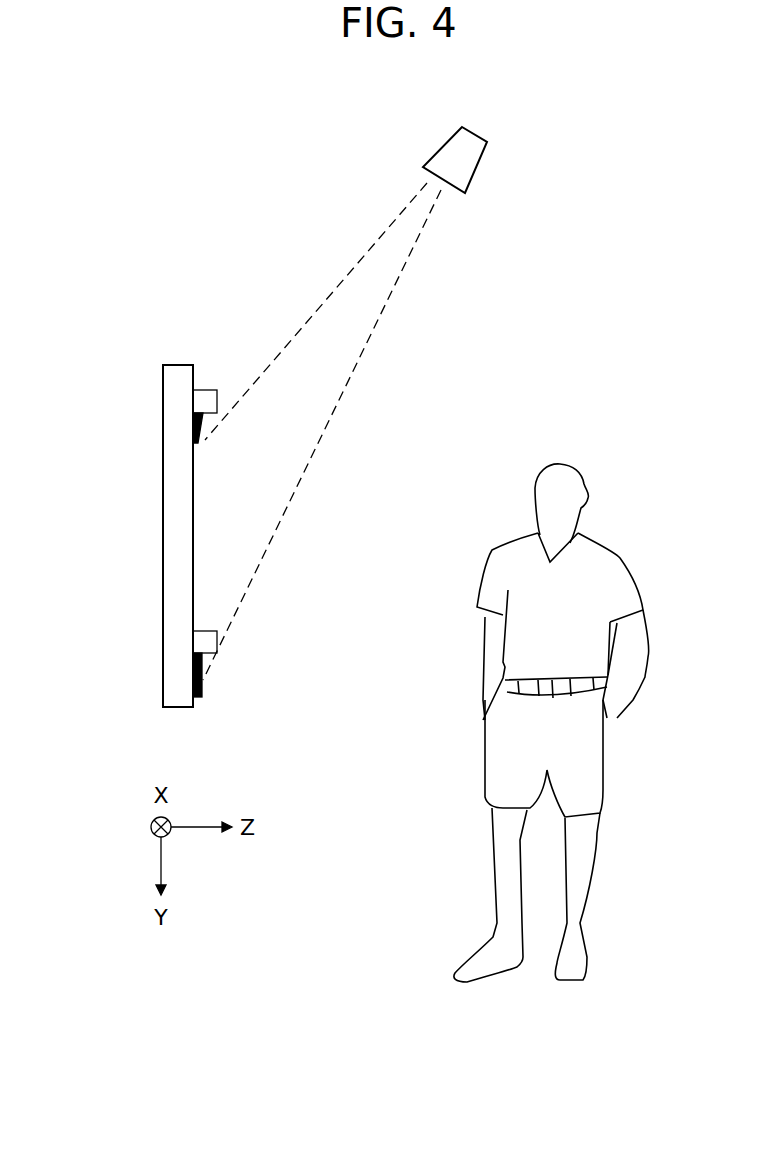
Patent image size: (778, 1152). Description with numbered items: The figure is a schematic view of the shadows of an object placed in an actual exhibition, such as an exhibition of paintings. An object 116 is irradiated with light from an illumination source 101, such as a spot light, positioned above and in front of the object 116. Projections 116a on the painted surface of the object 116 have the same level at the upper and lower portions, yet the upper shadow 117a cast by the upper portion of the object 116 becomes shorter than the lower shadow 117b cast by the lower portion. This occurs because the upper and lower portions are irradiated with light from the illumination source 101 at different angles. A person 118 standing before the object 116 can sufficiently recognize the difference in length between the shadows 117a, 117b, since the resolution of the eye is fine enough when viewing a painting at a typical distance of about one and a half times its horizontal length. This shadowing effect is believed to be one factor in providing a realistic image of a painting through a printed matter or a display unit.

The illumination source 101 is at (448, 153).
The object 116 is at (171, 356).
The projections 116a is at (205, 398).
The upper shadow 117a is at (176, 423).
The lower shadow 117b is at (178, 666).
The person 118 is at (583, 483).